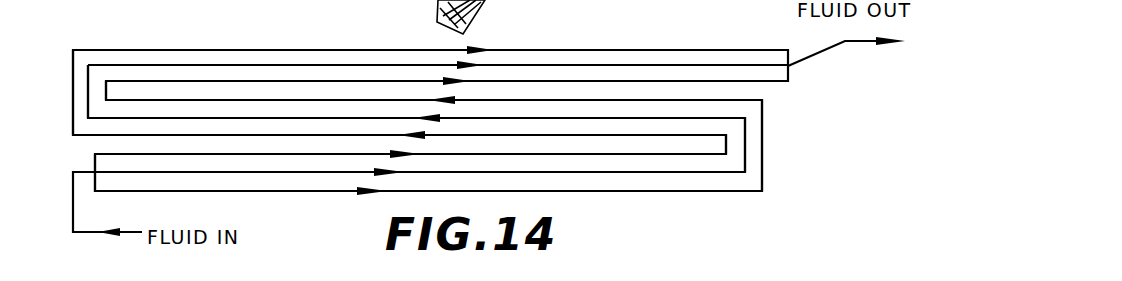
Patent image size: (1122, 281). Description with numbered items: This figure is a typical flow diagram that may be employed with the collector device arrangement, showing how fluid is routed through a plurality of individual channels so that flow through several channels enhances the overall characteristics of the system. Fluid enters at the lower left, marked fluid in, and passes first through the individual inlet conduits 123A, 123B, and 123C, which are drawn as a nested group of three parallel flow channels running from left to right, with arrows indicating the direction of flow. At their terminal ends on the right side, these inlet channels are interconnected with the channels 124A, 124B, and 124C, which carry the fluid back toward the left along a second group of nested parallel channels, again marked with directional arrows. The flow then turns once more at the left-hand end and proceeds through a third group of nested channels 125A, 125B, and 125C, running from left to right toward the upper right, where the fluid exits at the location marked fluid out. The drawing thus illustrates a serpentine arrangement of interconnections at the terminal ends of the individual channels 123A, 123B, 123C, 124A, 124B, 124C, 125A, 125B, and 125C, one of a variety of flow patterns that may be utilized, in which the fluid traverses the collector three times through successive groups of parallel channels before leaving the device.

The inlet conduit 123A is at (108, 192).
The inlet conduit 123B is at (200, 172).
The inlet conduit 123C is at (272, 154).
The channel 124A is at (512, 99).
The channel 124B is at (593, 117).
The channel 124C is at (677, 136).
The outlet tube section 125A is at (296, 81).
The outlet tube section 125B is at (192, 65).
The outlet tube section 125C is at (101, 50).